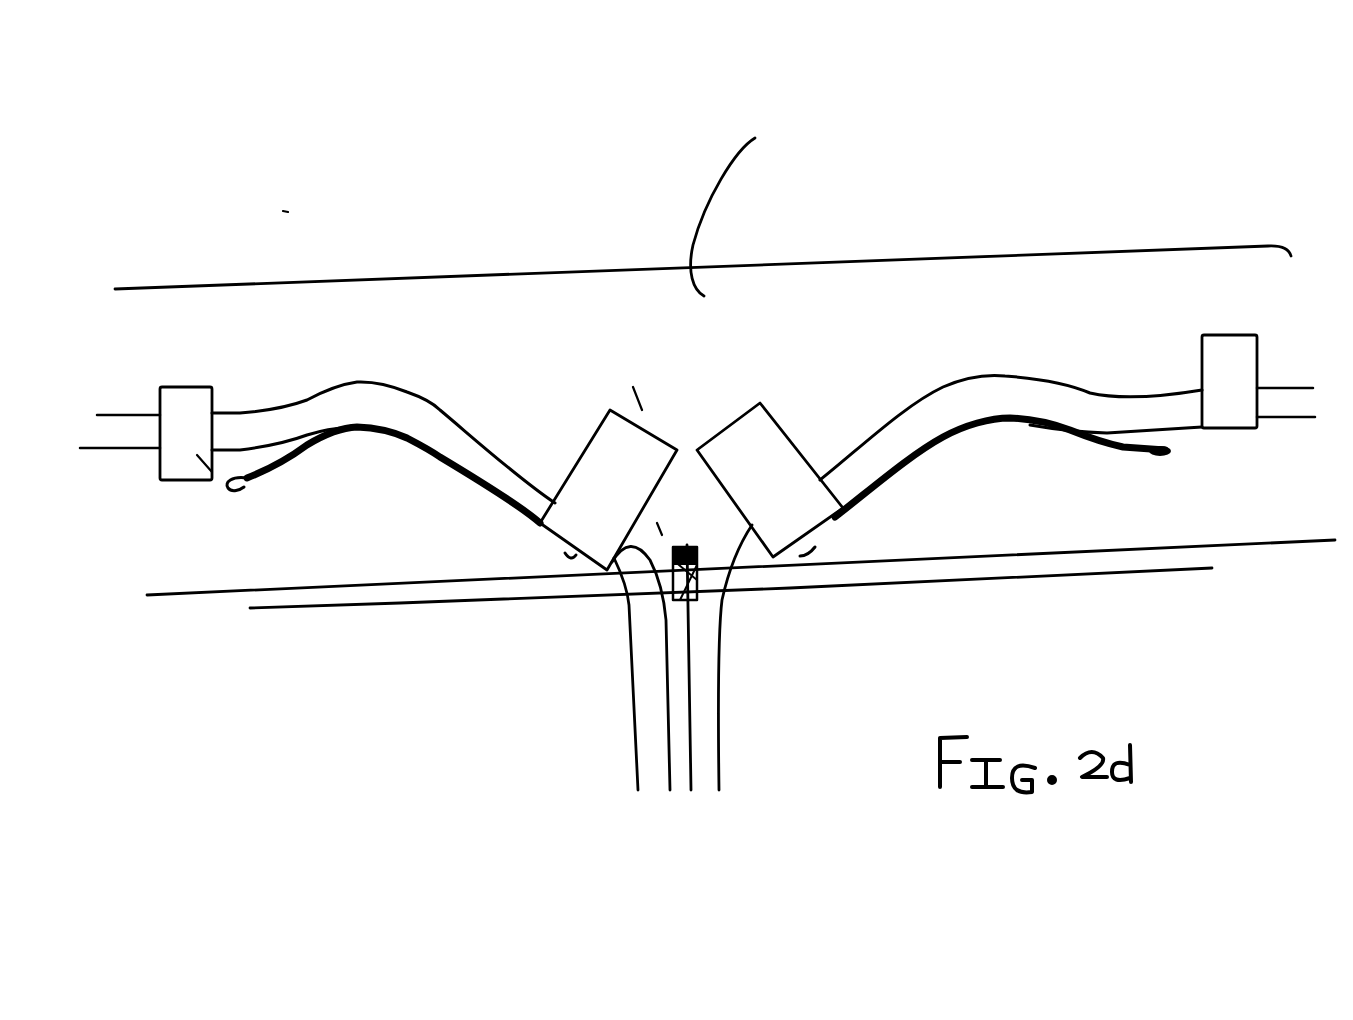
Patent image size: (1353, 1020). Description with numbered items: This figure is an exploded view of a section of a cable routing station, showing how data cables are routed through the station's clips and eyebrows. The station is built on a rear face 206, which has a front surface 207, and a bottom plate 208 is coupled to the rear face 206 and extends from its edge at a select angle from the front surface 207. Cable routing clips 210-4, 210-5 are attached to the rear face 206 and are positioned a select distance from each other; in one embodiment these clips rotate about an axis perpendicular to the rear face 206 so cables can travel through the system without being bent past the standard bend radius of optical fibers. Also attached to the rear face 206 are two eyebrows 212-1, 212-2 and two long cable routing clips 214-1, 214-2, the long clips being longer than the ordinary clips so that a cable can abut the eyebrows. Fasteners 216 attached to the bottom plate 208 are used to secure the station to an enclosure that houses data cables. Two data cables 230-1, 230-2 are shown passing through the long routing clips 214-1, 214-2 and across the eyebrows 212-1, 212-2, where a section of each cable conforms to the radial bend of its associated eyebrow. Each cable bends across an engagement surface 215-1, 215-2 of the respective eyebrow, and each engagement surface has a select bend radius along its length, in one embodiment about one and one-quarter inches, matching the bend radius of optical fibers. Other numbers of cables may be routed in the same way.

The rear face 206 is at (443, 327).
The front surface 207 is at (741, 201).
The bottom plate 208 is at (433, 592).
The cable routing clip 210-4 is at (187, 387).
The cable routing clip 210-5 is at (1232, 335).
The eyebrow 212-1 is at (597, 427).
The eyebrow 212-2 is at (772, 410).
The long cable routing clip 214-1 is at (280, 470).
The long cable routing clip 214-2 is at (1048, 430).
The engagement surface 215-1 is at (257, 472).
The engagement surface 215-2 is at (1140, 450).
The fastener 216 is at (677, 572).
The data cable 230-1 is at (357, 382).
The data cable 230-2 is at (967, 376).